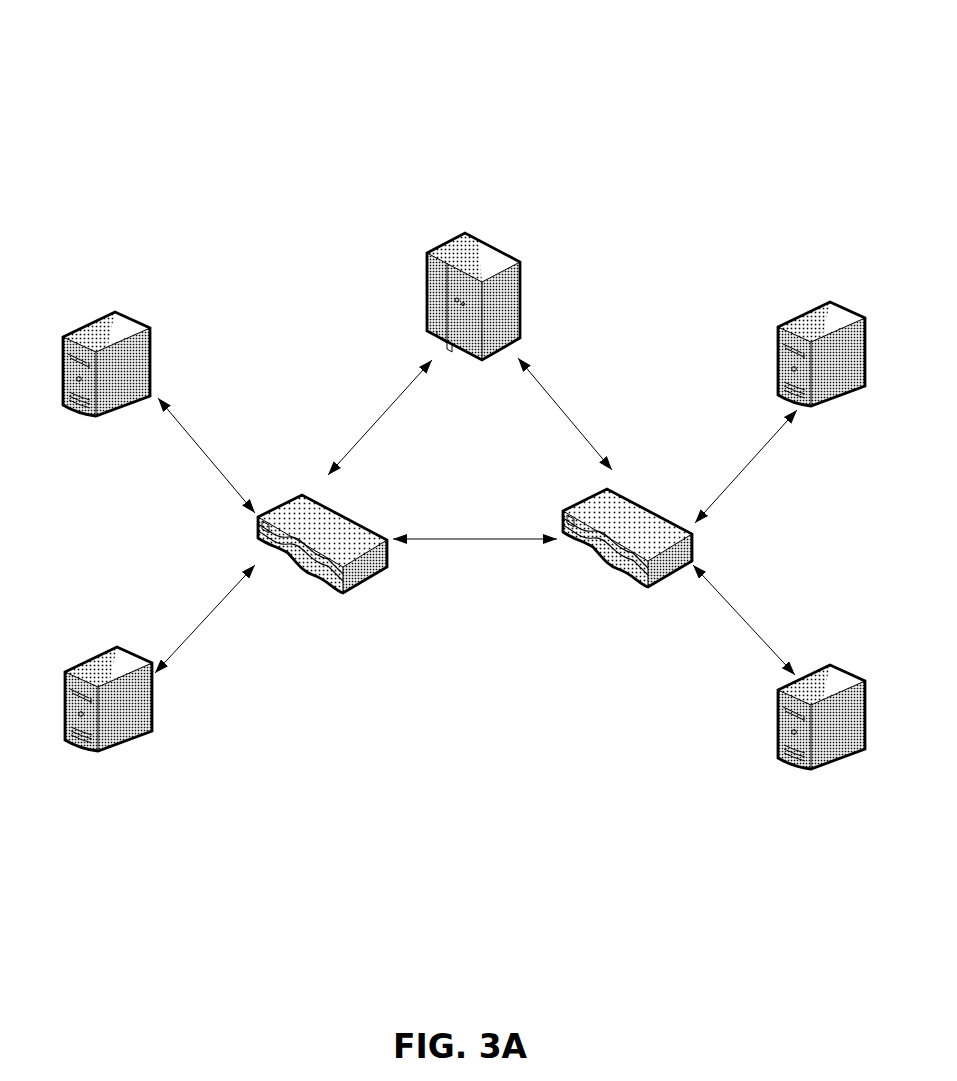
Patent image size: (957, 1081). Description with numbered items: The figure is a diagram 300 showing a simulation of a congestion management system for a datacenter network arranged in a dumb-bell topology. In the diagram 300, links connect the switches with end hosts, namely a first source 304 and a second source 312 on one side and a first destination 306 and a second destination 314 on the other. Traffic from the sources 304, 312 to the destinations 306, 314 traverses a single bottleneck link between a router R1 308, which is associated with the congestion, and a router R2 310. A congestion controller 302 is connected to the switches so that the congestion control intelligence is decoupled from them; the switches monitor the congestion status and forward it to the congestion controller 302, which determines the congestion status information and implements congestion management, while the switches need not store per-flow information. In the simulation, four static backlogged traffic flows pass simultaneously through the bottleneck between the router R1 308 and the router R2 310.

The diagram 300 is at (738, 50).
The congestion controller 302 is at (488, 233).
The source 304 is at (135, 315).
The destination 306 is at (778, 320).
The router R1 308 is at (352, 502).
The router R2 310 is at (570, 492).
The source 312 is at (112, 643).
The destination 314 is at (768, 678).